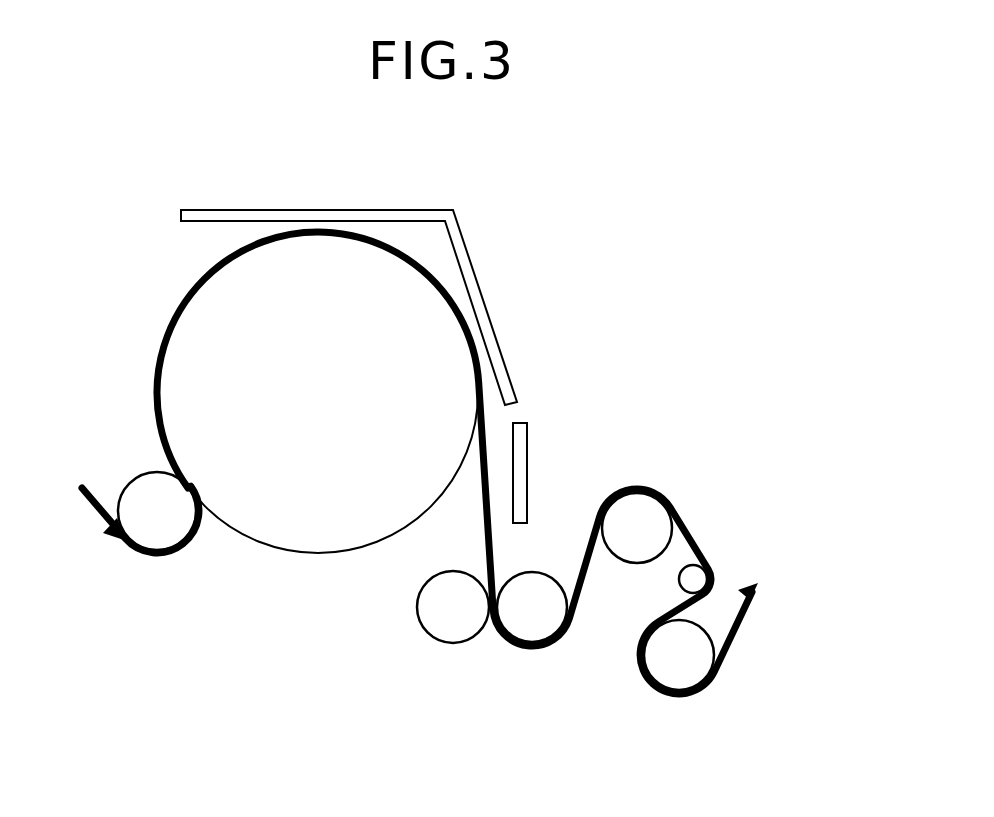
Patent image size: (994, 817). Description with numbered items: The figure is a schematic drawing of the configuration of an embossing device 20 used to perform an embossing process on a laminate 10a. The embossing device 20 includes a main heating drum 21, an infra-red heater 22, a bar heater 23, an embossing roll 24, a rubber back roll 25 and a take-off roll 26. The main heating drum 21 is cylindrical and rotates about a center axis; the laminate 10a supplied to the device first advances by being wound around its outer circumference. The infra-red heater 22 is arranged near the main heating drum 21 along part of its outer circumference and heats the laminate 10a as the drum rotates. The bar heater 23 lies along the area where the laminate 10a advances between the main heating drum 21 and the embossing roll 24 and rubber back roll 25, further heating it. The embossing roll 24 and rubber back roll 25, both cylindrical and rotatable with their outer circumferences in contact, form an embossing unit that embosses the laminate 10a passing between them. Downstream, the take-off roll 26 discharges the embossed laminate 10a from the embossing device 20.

The embossing device 20 is at (698, 166).
The main heating drum 21 is at (163, 343).
The infra-red heater 22 is at (477, 278).
The bar heater 23 is at (527, 460).
The embossing roll 24 is at (549, 645).
The rubber back roll 25 is at (434, 642).
The take-off roll 26 is at (682, 585).
The laminate 10a is at (489, 517).